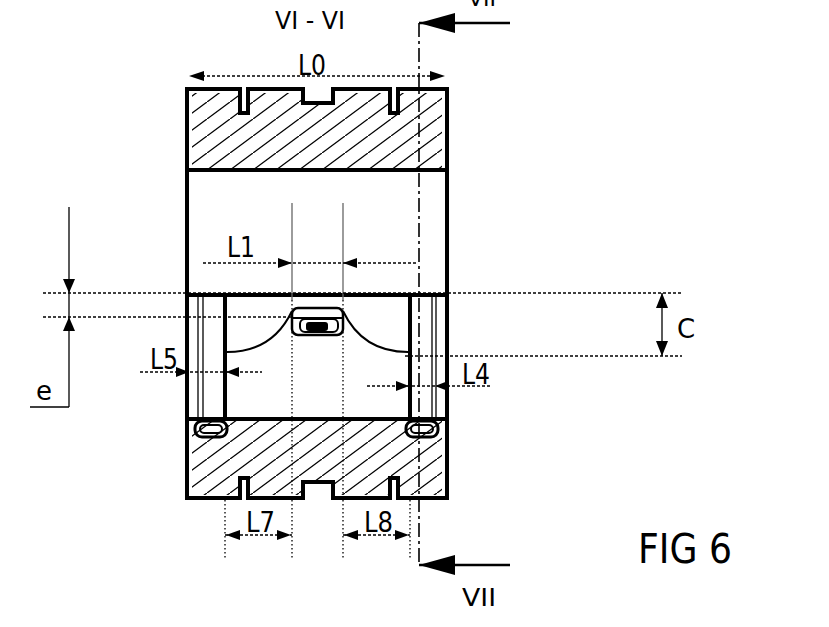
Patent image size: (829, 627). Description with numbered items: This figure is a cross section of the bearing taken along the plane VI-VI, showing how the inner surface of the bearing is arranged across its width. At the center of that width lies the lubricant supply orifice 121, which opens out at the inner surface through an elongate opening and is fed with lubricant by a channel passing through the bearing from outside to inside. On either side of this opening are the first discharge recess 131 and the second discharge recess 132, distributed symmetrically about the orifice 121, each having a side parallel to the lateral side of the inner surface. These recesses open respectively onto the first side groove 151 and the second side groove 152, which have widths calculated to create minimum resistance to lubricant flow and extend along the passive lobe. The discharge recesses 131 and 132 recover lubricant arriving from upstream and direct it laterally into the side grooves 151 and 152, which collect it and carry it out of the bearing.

The lubricant supply orifice 121 is at (343, 328).
The first discharge recess 131 is at (388, 313).
The second discharge recess 132 is at (237, 325).
The first side groove 151 is at (445, 428).
The second side groove 152 is at (207, 378).